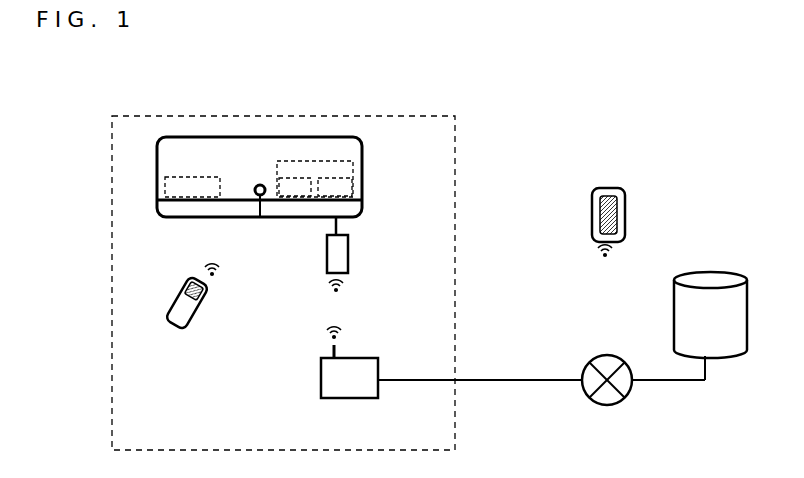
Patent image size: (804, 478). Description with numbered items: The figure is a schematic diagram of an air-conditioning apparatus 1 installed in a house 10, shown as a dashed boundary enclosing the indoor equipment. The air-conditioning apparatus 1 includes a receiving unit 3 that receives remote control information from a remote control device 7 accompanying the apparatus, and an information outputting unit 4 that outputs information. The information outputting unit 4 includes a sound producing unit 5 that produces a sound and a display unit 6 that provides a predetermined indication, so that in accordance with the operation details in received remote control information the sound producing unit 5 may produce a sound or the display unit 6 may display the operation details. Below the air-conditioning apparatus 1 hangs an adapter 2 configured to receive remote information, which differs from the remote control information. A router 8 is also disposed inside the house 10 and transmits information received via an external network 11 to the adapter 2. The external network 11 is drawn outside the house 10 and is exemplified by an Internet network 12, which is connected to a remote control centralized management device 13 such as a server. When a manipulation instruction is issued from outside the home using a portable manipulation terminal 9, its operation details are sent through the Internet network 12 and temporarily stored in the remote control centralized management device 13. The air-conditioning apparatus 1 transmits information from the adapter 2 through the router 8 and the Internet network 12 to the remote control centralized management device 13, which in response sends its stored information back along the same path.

The air-conditioning apparatus 1 is at (371, 172).
The adapter 2 is at (340, 252).
The receiving unit 3 is at (191, 188).
The information outputting unit 4 is at (278, 163).
The sound producing unit 5 is at (301, 183).
The display unit 6 is at (338, 183).
The remote control device 7 is at (202, 321).
The router 8 is at (321, 378).
The portable manipulation terminal 9 is at (591, 212).
The house 10 is at (456, 150).
The external network 11 is at (577, 336).
The Internet network 12 is at (607, 362).
The remote control centralized management device 13 is at (706, 280).